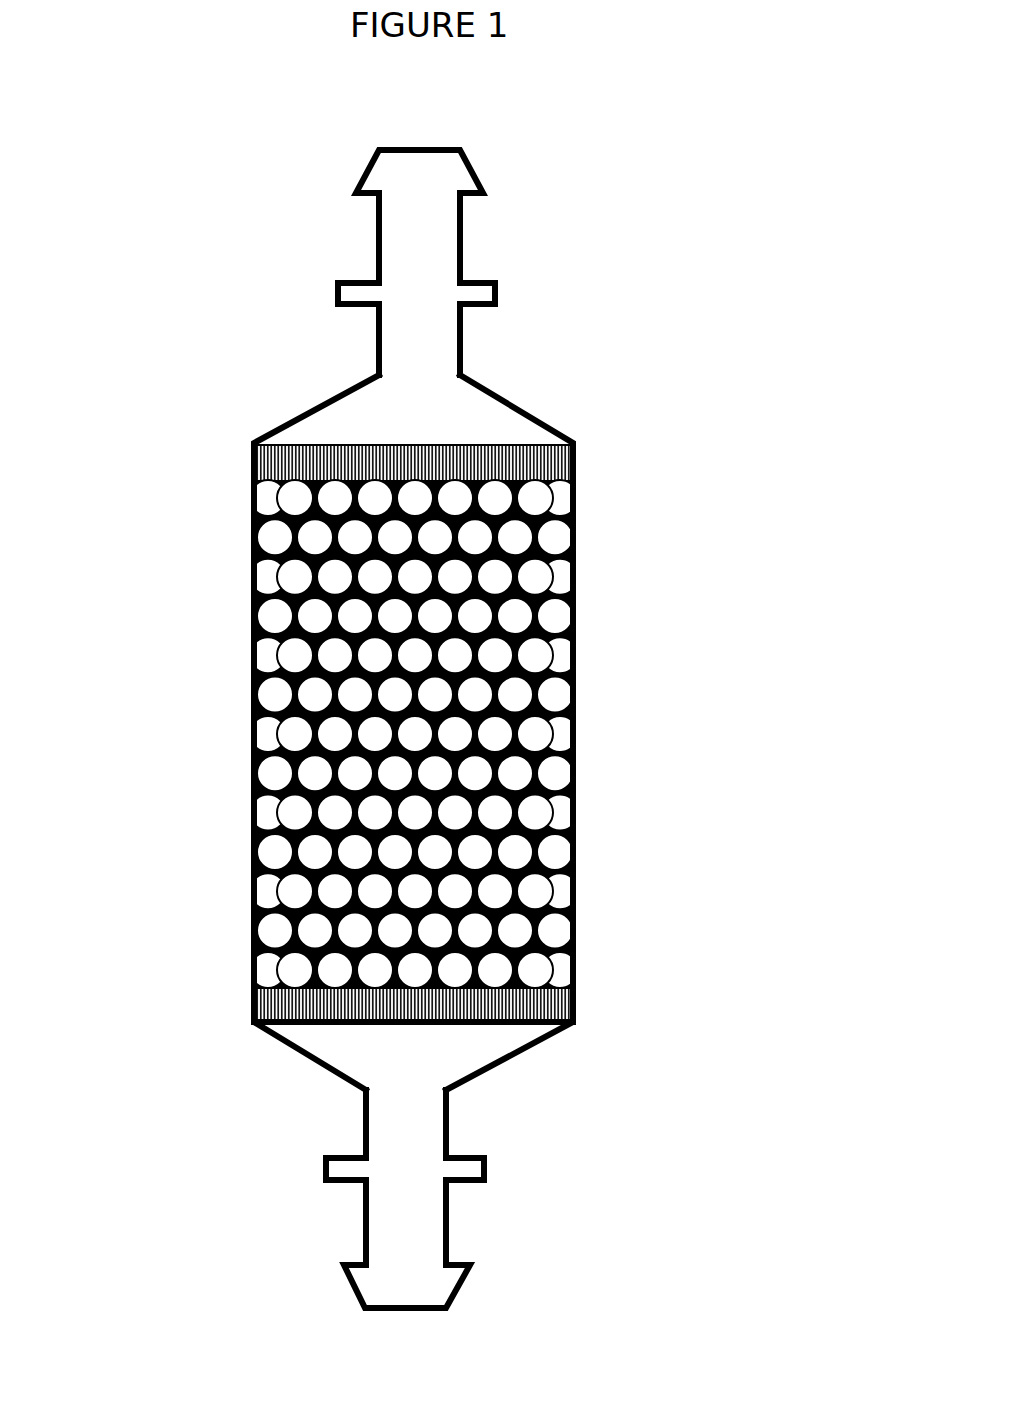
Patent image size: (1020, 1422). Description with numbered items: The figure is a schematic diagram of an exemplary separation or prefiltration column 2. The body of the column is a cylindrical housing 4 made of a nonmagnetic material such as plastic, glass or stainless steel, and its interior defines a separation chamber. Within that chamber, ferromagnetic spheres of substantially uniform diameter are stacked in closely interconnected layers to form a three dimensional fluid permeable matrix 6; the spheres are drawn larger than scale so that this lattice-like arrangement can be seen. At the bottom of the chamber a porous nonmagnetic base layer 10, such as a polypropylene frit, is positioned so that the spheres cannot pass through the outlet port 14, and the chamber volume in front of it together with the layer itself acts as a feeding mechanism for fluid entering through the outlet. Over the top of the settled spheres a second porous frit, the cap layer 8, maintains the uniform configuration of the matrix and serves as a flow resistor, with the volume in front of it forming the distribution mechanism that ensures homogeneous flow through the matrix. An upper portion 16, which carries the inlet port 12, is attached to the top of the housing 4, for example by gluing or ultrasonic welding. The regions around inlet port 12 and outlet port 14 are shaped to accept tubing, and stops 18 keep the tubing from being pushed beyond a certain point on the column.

The separation column 2 is at (297, 330).
The housing 4 is at (248, 700).
The three dimensional fluid permeable matrix 6 is at (530, 588).
The cap layer 8 is at (272, 467).
The base layer 10 is at (268, 998).
The inlet port 12 is at (418, 180).
The outlet port 14 is at (422, 1290).
The upper portion 16 is at (460, 372).
The stops 18 is at (463, 1175).